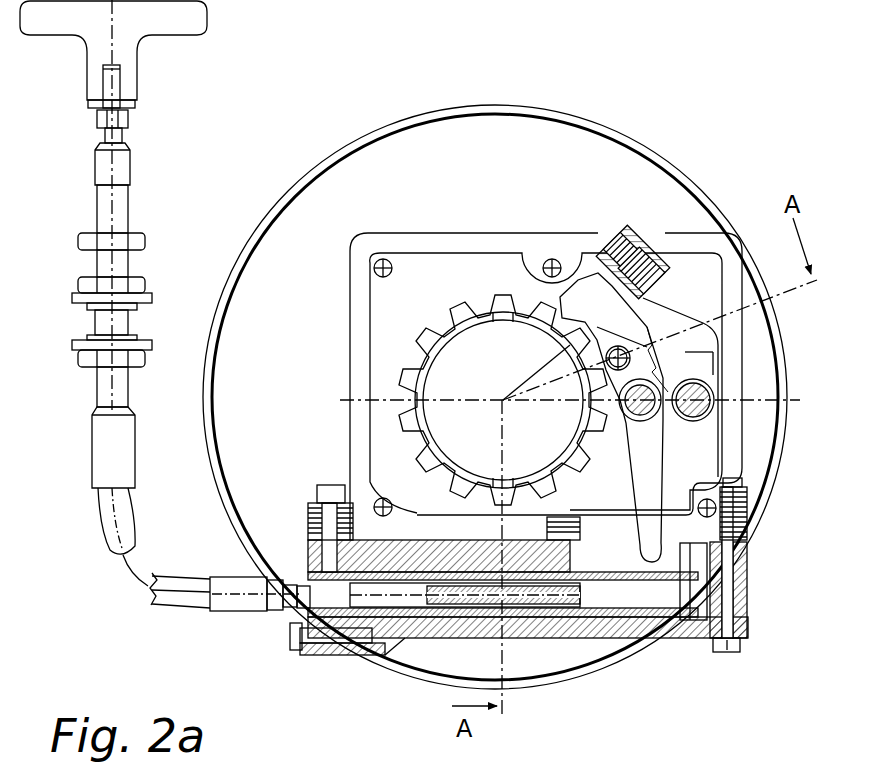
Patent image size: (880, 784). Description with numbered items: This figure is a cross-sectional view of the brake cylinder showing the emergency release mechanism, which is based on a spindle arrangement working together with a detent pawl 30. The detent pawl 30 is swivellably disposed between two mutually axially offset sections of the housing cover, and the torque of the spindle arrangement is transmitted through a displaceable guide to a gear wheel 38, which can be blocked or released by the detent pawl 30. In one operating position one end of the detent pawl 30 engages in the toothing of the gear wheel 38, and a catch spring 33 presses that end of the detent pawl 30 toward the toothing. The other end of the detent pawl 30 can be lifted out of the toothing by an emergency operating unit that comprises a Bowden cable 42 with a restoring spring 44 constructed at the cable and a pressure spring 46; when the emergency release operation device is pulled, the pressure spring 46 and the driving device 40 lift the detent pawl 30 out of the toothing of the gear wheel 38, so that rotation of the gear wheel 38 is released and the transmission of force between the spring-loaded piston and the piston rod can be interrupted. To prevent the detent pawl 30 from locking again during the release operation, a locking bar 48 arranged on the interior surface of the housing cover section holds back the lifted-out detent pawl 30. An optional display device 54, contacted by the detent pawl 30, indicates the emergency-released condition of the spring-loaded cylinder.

The detent pawl 30 is at (640, 463).
The catch spring 33 is at (697, 382).
The gear wheel 38 is at (465, 300).
The driving device 40 is at (705, 638).
The Bowden cable 42 is at (90, 507).
The restoring spring 44 is at (530, 603).
The pressure spring 46 is at (490, 598).
The locking bar 48 is at (603, 345).
The display device 54 is at (643, 233).